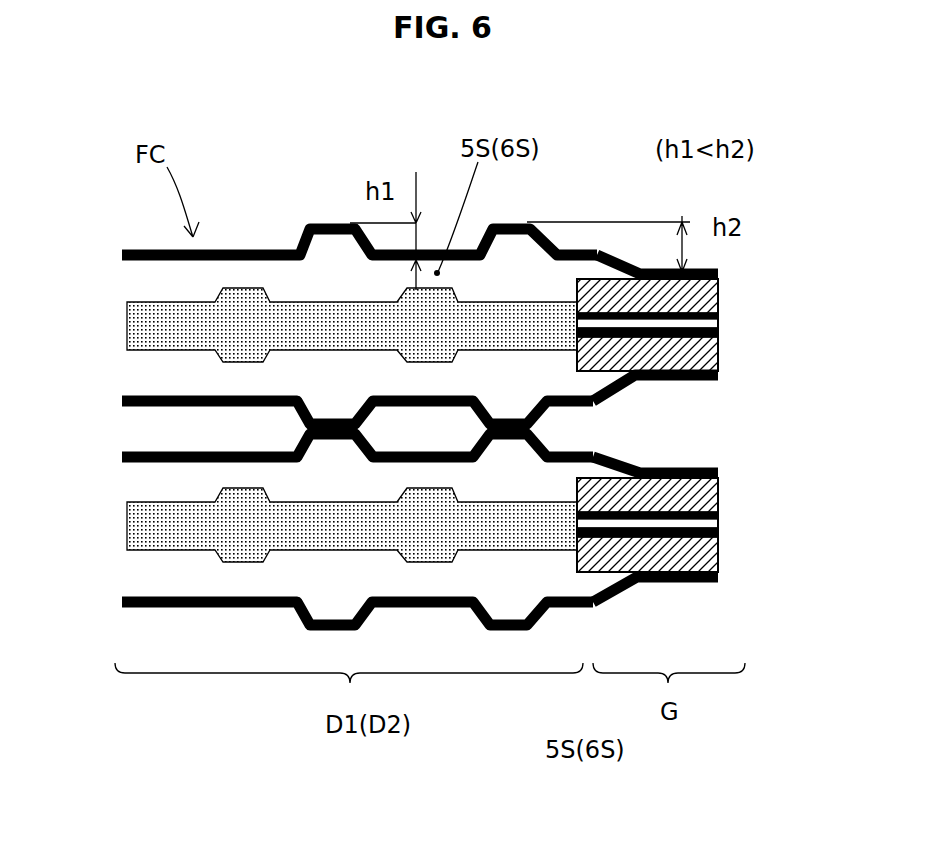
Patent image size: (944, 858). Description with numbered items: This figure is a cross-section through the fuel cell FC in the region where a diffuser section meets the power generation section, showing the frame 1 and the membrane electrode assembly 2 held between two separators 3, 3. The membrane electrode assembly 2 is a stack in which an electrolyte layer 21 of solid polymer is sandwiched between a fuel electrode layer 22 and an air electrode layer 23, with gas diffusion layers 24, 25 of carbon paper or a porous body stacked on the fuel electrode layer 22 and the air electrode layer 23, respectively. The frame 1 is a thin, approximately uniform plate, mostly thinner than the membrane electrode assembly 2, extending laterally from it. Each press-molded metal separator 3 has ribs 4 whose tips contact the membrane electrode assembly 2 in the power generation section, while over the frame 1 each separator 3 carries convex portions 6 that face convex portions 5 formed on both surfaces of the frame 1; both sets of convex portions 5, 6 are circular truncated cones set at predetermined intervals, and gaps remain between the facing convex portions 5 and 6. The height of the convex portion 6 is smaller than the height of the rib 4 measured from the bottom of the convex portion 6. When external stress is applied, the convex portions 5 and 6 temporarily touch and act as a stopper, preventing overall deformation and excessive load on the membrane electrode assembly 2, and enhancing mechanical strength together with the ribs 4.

The frame 1 is at (140, 315).
The membrane electrode assembly 2 is at (722, 429).
The separator 3 is at (150, 250).
The rib 4 is at (617, 255).
The convex portion of the frame 5 is at (452, 293).
The convex portion of the separator 6 is at (367, 405).
The electrolyte layer 21 is at (700, 525).
The fuel electrode layer 22 is at (713, 517).
The air electrode layer 23 is at (715, 533).
The gas diffusion layer 24 is at (707, 492).
The gas diffusion layer 25 is at (823, 442).